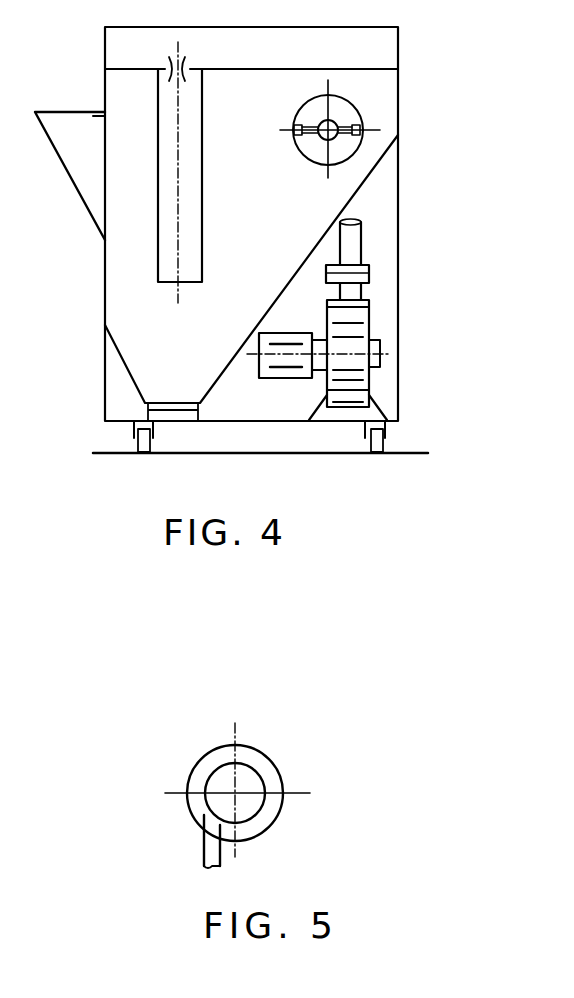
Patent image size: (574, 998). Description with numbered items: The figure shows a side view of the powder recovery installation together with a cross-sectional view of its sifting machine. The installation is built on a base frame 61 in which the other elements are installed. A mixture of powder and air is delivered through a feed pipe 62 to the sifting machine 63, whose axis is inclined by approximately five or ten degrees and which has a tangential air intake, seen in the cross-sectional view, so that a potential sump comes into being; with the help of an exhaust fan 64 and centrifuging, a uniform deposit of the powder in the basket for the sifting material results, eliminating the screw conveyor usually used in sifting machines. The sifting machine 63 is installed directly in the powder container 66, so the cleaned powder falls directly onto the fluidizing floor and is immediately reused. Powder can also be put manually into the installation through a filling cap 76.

In FIG. 4, the base frame 61 is at (105, 386).
In FIG. 5, the feed pipe 62 is at (208, 848).
In FIG. 5, the sifting machine 63 is at (210, 790).
In FIG. 4, the exhaust fan 64 is at (360, 383).
In FIG. 4, the powder container 66 is at (303, 259).
In FIG. 4, the filling cap 76 is at (63, 110).